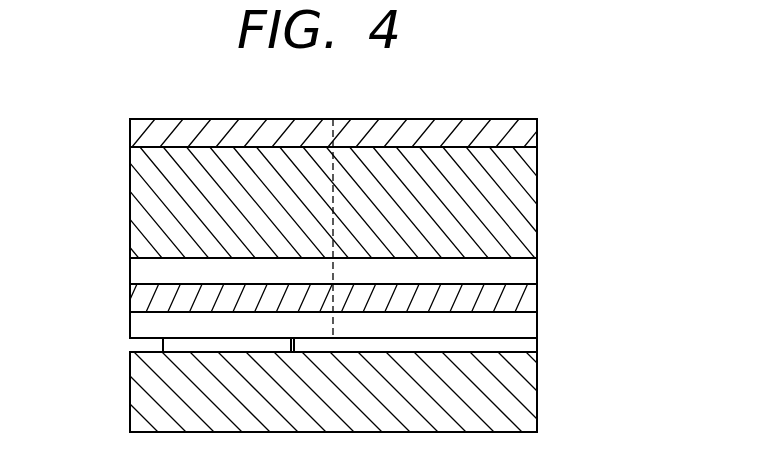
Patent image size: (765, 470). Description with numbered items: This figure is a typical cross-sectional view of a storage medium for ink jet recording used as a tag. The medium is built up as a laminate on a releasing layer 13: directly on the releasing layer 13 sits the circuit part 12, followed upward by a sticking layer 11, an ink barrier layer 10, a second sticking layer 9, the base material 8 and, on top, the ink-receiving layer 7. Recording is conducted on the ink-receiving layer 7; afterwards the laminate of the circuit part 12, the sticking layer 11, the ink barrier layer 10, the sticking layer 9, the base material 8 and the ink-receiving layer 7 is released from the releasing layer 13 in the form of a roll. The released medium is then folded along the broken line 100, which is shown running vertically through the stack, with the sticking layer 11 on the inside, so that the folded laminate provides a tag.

The ink-receiving layer 7 is at (528, 128).
The base material 8 is at (528, 195).
The sticking layer 9 is at (528, 265).
The ink barrier layer 10 is at (528, 298).
The sticking layer 11 is at (528, 327).
The circuit part 12 is at (167, 348).
The releasing layer 13 is at (528, 363).
The broken line 100 is at (335, 172).